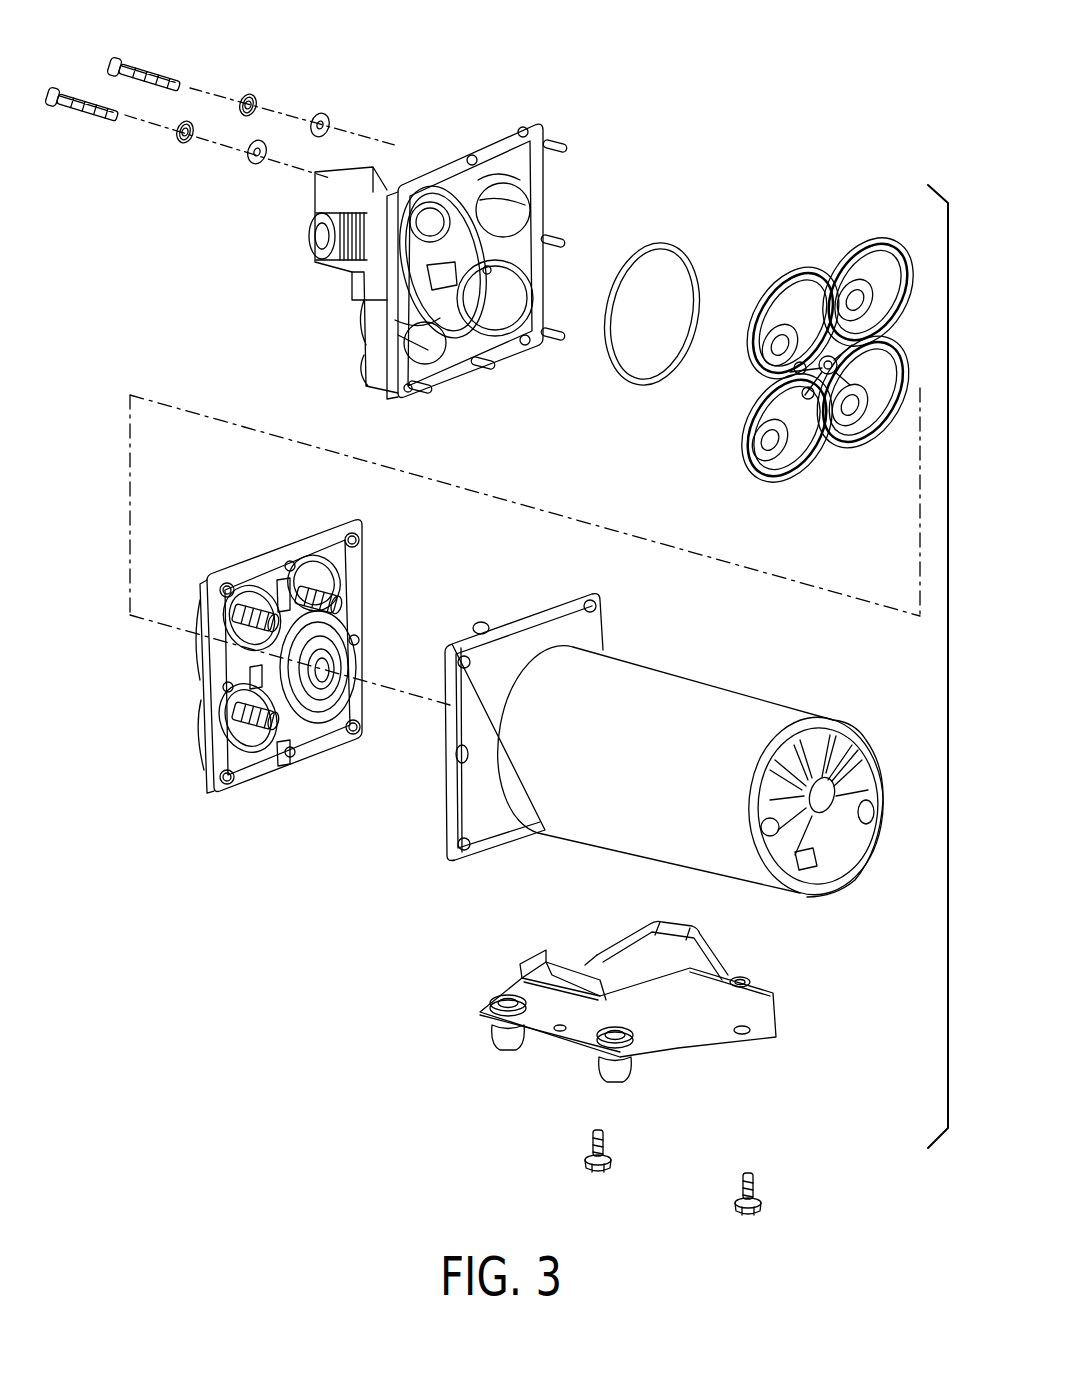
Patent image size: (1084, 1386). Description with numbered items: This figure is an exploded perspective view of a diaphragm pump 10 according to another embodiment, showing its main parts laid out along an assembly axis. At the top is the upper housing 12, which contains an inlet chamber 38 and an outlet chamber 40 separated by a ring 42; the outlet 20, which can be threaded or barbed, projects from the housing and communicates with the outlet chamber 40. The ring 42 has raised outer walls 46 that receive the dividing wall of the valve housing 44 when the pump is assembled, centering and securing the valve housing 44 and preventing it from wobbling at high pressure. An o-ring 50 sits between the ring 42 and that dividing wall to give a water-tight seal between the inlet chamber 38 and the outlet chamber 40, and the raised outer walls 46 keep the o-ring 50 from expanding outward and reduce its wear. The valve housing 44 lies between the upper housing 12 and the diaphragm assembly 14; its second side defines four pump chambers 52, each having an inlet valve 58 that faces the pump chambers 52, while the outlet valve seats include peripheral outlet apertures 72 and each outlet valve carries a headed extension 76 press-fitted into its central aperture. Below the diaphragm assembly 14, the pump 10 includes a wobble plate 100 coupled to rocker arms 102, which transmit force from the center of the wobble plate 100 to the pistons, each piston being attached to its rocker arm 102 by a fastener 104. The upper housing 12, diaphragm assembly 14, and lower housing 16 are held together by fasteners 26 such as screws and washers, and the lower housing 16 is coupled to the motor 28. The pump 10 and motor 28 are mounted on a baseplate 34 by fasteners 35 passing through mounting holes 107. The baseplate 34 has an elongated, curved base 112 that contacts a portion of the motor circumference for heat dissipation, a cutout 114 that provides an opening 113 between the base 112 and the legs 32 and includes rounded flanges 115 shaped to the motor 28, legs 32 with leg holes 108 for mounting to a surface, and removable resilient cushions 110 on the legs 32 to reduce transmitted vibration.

The pump 10 is at (715, 45).
The upper housing 12 is at (482, 148).
The diaphragm assembly 14 is at (205, 765).
The lower housing 16 is at (445, 820).
The outlet 20 is at (330, 248).
The fasteners 26 is at (343, 104).
The motor 28 is at (742, 702).
The legs 32 is at (583, 1040).
The baseplate 34 is at (628, 1004).
The fasteners 35 is at (600, 1172).
The inlet chamber 38 is at (515, 190).
The outlet chamber 40 is at (426, 212).
The ring 42 is at (480, 242).
The valve housing 44 is at (823, 352).
The raised outer walls 46 is at (405, 332).
The o-ring 50 is at (641, 252).
The pump chambers 52 is at (823, 288).
The inlet valve 58 is at (770, 300).
The peripheral outlet apertures 72 is at (850, 280).
The headed extension 76 is at (812, 392).
The wobble plate 100 is at (312, 705).
The rocker arms 102 is at (225, 705).
The fastener 104 is at (270, 592).
The mounting holes 107 is at (640, 952).
The leg holes 108 is at (558, 1032).
The cushions 110 is at (500, 1040).
The base 112 is at (700, 1010).
The opening 113 is at (562, 1005).
The cutout 114 is at (560, 978).
The rounded flanges 115 is at (590, 972).